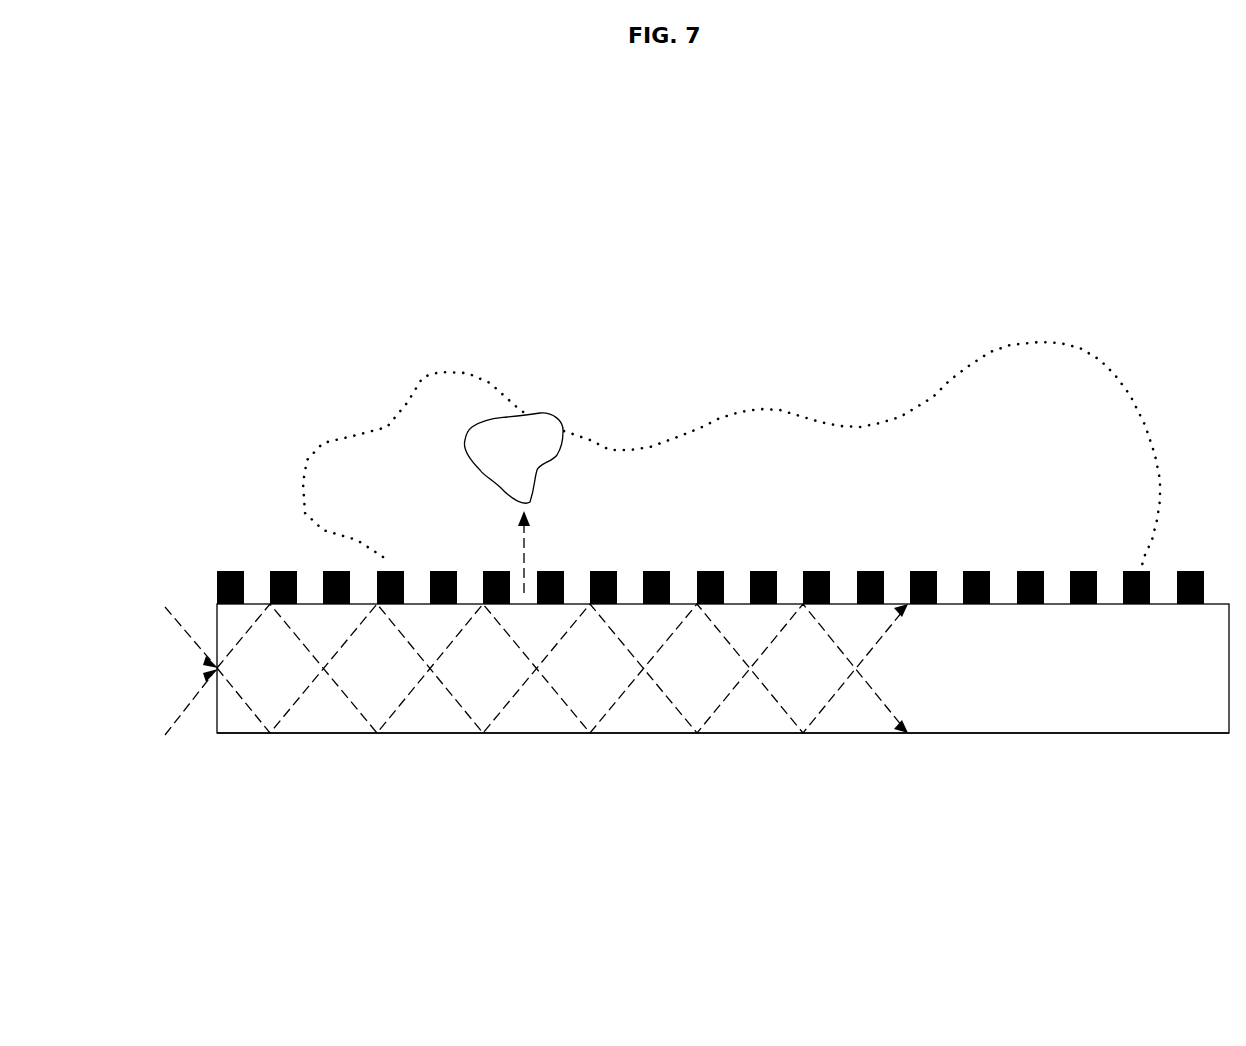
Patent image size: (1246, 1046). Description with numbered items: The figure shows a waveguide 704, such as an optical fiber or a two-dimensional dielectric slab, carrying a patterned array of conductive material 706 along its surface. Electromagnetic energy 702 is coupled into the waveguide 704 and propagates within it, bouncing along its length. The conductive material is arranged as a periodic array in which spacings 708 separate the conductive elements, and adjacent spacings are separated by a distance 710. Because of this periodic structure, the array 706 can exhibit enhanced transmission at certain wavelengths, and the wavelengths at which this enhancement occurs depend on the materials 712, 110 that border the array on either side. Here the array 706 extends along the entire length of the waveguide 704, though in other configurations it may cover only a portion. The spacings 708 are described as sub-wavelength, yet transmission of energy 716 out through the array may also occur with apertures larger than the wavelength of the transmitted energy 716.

The material bordering the array 110 is at (775, 446).
The electromagnetic energy 702 is at (177, 623).
The waveguide 704 is at (1098, 734).
The patterned array of conductive material 706 is at (1188, 569).
The spacings 708 is at (1127, 518).
The distance 710 is at (887, 550).
The material bordering the array 712 is at (1068, 675).
The transmitted energy 716 is at (520, 548).